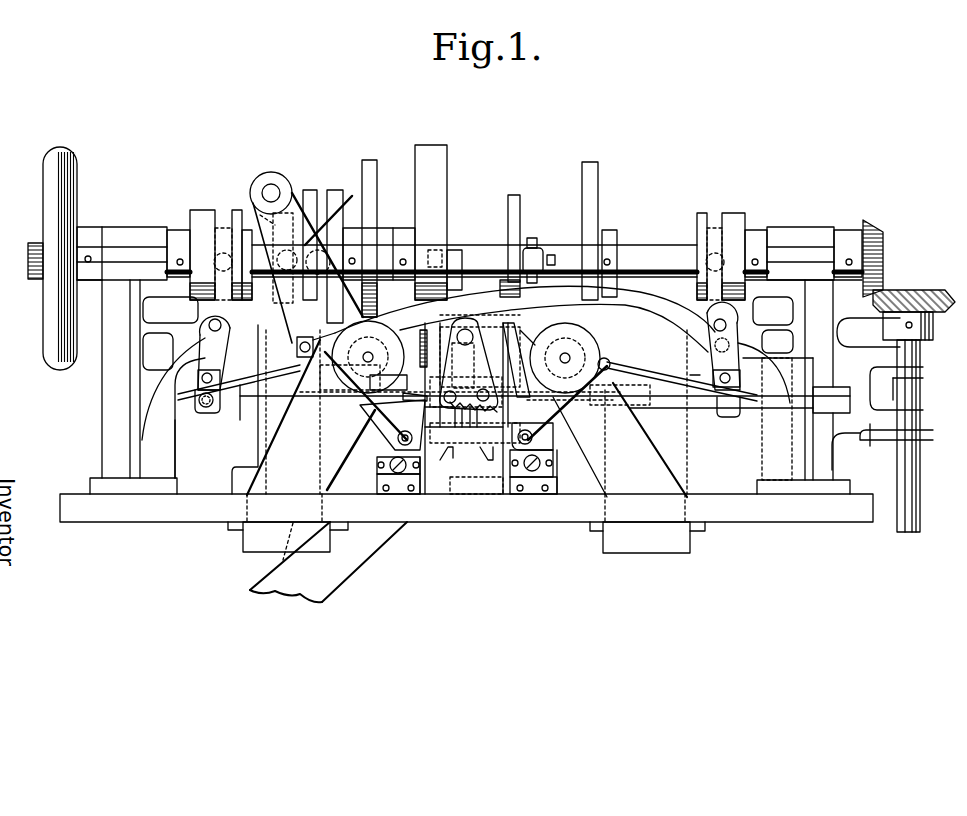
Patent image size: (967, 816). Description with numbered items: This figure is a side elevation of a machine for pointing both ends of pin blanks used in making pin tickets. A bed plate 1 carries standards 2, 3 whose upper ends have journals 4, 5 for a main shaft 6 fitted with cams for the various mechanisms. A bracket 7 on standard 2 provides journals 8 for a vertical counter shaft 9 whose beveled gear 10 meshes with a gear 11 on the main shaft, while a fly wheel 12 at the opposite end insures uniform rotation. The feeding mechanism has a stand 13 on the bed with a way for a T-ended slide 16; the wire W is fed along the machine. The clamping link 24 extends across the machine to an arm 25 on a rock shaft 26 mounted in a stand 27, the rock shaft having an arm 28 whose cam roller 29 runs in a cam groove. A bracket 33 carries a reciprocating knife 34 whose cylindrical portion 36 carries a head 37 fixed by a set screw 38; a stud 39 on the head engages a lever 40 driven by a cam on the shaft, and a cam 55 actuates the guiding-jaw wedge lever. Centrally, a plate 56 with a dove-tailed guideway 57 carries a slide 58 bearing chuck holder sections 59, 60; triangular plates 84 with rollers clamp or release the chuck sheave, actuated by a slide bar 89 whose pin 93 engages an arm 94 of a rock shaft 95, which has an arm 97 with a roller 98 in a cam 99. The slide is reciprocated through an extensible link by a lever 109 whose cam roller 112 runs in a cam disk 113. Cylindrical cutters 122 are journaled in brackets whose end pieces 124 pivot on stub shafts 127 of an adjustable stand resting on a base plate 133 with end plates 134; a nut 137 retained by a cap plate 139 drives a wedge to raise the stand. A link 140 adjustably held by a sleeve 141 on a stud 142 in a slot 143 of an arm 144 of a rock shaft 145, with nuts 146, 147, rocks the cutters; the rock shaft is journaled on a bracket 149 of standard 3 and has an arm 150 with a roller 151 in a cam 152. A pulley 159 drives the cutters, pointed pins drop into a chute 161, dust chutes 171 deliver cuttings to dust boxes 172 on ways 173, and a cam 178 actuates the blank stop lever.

The bed plate 1 is at (838, 520).
The standard 2 is at (825, 336).
The standard 3 is at (100, 424).
The journal 4 is at (115, 240).
The journal 5 is at (812, 236).
The main shaft 6 is at (678, 246).
The bracket 7 is at (896, 445).
The journals 8 is at (928, 380).
The counter shaft 9 is at (920, 488).
The beveled gear 10 is at (932, 294).
The gear 11 is at (884, 258).
The fly wheel 12 is at (45, 194).
The stand 13 is at (750, 487).
The slide 16 is at (846, 451).
The link 24 is at (648, 318).
The arm 25 is at (340, 222).
The rock shaft 26 is at (272, 188).
The stand 27 is at (262, 440).
The arm 28 is at (293, 200).
The cam roller 29 is at (275, 230).
The bracket 33 is at (590, 288).
The knife 34 is at (530, 323).
The cylindrical portion 36 is at (540, 252).
The head 37 is at (542, 247).
The set screw 38 is at (553, 257).
The stud 39 is at (512, 262).
The lever 40 is at (517, 205).
The cam 55 is at (598, 185).
The plate 56 is at (478, 487).
The dove-tailed guideway 57 is at (483, 452).
The slide 58 is at (452, 452).
The chuck holder section 59 is at (512, 418).
The chuck holder section 60 is at (412, 444).
The triangular plates 84 is at (470, 330).
The slide bar 89 is at (322, 405).
The pin 93 is at (316, 426).
The arm 94 is at (308, 390).
The rock shaft 95 is at (370, 298).
The arm 97 is at (342, 268).
The roller 98 is at (345, 250).
The cam 99 is at (335, 190).
The lever 109 is at (458, 252).
The cam roller 112 is at (440, 252).
The cam disk 113 is at (428, 145).
The cylindrical cutters 122 is at (388, 338).
The end piece 124 is at (370, 408).
The stub shafts 127 is at (397, 437).
The base plate 133 is at (366, 488).
The end plates 134 is at (418, 494).
The nut 137 is at (378, 462).
The cap plate 139 is at (388, 494).
The link 140 is at (238, 398).
The sleeve 141 is at (198, 413).
The stud 142 is at (222, 382).
The slot 143 is at (205, 374).
The arm 144 is at (200, 352).
The rock shaft 145 is at (205, 318).
The nut 146 is at (213, 414).
The nut 147 is at (195, 402).
The bracket 149 is at (178, 365).
The arm 150 is at (222, 290).
The roller 151 is at (224, 300).
The cam 152 is at (205, 215).
The pulley 159 is at (610, 320).
The chute 161 is at (383, 535).
The dust chutes 171 is at (255, 470).
The dust boxes 172 is at (250, 550).
The ways 173 is at (228, 526).
The cam 178 is at (368, 160).
The work piece W is at (549, 391).